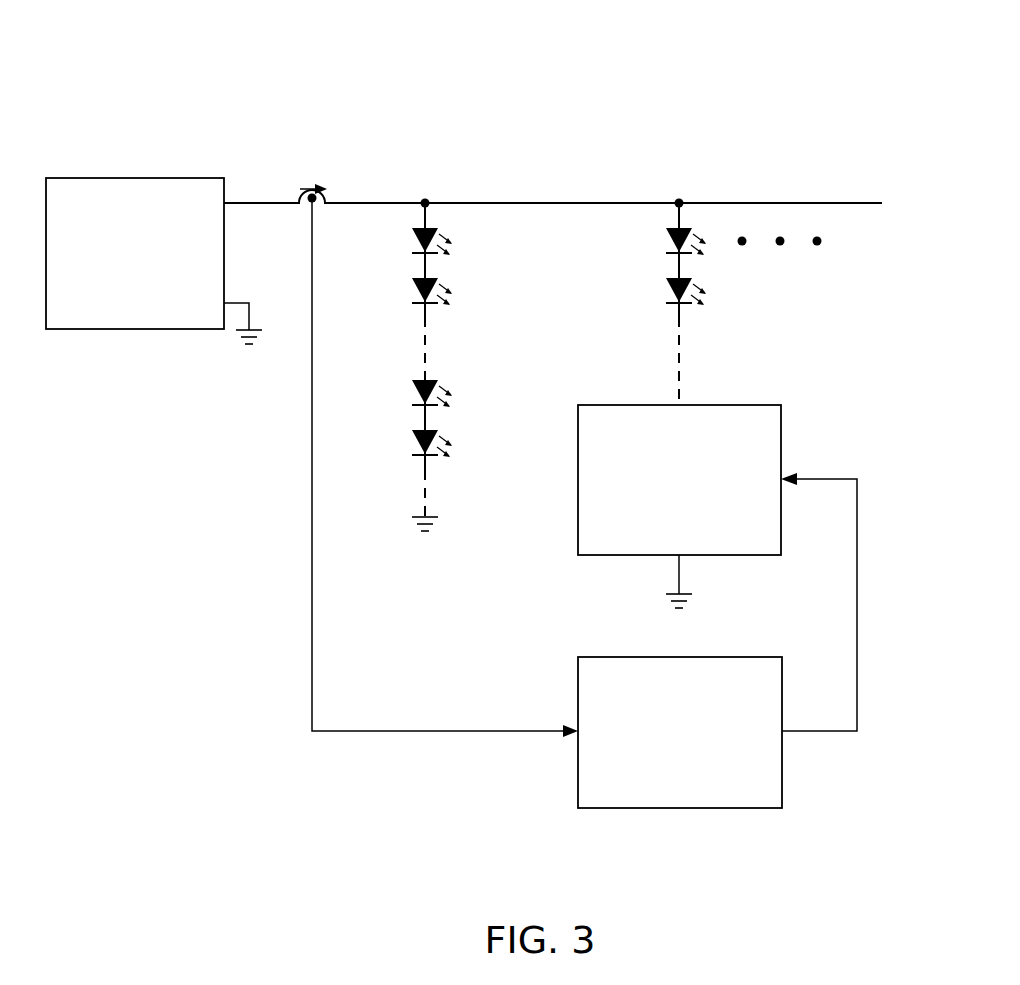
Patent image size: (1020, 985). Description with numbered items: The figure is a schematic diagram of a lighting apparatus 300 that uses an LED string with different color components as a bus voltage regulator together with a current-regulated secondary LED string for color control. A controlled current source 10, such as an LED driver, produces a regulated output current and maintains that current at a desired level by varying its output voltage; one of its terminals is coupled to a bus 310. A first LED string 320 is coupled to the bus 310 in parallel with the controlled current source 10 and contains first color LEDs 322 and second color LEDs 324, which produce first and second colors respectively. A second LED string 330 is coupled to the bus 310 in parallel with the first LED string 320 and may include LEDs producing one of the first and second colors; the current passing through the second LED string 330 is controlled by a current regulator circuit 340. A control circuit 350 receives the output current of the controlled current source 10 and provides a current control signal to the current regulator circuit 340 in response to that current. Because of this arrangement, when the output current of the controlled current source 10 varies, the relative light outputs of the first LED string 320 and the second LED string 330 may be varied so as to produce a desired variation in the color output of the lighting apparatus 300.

The lighting apparatus 300 is at (503, 68).
The controlled current source 10 is at (135, 178).
The bus 310 is at (830, 203).
The first LED string 320 is at (475, 385).
The first color LEDs 322 is at (450, 222).
The second color LEDs 324 is at (450, 370).
The second LED string 330 is at (630, 321).
The current regulator circuit 340 is at (578, 479).
The control circuit 350 is at (680, 808).